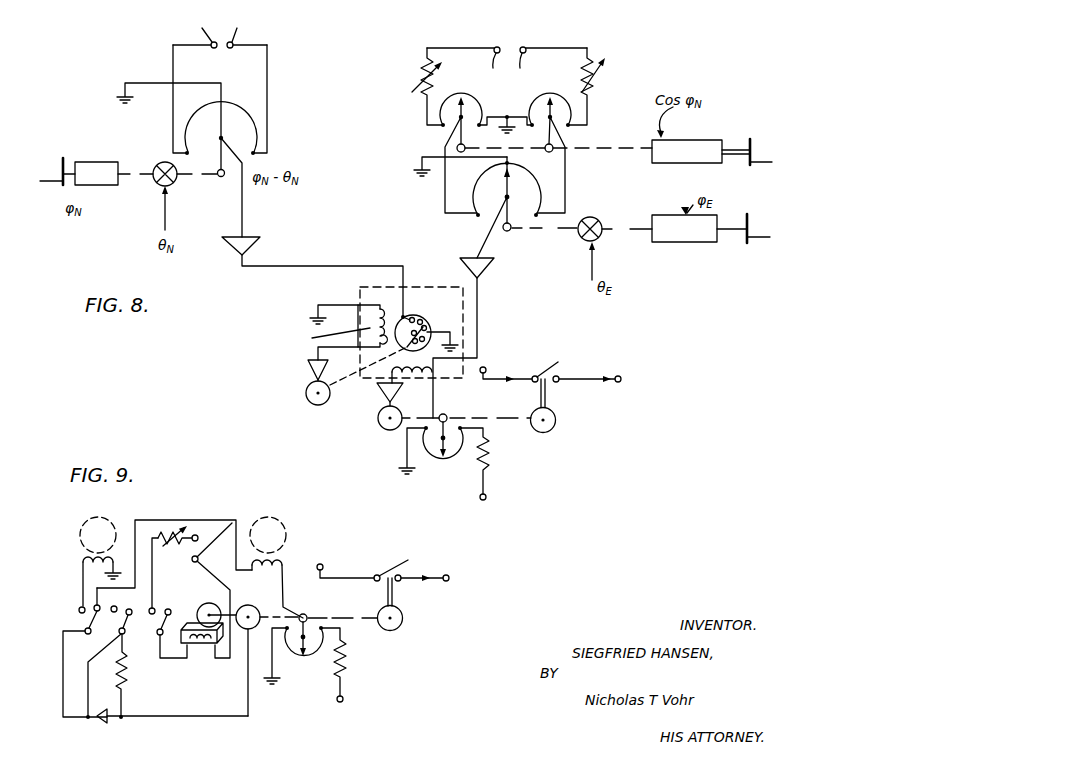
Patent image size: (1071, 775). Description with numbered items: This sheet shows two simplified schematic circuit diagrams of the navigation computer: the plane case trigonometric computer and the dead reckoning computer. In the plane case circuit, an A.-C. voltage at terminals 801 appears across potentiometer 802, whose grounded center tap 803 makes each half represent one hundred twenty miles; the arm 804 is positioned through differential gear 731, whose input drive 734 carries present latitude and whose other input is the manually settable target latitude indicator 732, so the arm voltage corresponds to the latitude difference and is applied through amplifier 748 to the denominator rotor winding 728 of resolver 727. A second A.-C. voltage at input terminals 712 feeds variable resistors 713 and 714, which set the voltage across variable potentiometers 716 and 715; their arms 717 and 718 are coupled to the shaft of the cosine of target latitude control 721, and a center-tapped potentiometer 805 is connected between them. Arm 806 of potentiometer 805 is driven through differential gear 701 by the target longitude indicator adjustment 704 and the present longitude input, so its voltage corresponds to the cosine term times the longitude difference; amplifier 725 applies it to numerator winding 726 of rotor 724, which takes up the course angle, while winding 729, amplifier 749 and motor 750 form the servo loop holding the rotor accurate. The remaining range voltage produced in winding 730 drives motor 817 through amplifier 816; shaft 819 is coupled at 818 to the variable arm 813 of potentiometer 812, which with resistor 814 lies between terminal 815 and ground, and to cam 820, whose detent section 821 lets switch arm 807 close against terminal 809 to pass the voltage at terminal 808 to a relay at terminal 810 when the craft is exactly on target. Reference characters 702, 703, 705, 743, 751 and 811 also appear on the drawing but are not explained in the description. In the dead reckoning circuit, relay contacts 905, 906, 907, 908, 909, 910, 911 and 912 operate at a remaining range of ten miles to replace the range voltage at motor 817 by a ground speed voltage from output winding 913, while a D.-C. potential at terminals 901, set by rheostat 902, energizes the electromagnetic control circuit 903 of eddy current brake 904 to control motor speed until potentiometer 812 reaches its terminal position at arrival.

In FIG. 8, the differential gear 701 is at (598, 218).
In FIG. 8, the theta E input arrow 702 is at (588, 258).
In FIG. 8, the connection line 703 is at (636, 226).
In FIG. 8, the target longitude indicator adjustment 704 is at (680, 243).
In FIG. 8, the potentiometer wiper contact 705 is at (511, 231).
In FIG. 8, the input terminals 712 is at (507, 63).
In FIG. 8, the variable resistor 713 is at (412, 78).
In FIG. 8, the variable resistor 714 is at (600, 84).
In FIG. 8, the variable potentiometer 715 is at (556, 89).
In FIG. 8, the variable potentiometer 716 is at (480, 89).
In FIG. 8, the variable arm 717 is at (441, 147).
In FIG. 8, the variable arm 718 is at (566, 147).
In FIG. 8, the cosine of target latitude control 721 is at (678, 139).
In FIG. 8, the rotor 724 is at (416, 316).
In FIG. 9, the rotor 724 is at (287, 528).
In FIG. 8, the amplifier 725 is at (473, 256).
In FIG. 8, the numerator winding 726 is at (433, 368).
In FIG. 8, the resolver 727 is at (343, 292).
In FIG. 8, the denominator rotor winding 728 is at (423, 318).
In FIG. 8, the winding 729 is at (312, 338).
In FIG. 8, the remaining range resolver winding 730 is at (417, 373).
In FIG. 9, the remaining range resolver winding 730 is at (288, 562).
In FIG. 8, the differential gear 731 is at (165, 161).
In FIG. 8, the target latitude indicator 732 is at (105, 161).
In FIG. 8, the input drive 734 is at (158, 186).
In FIG. 8, the connection 743 is at (193, 181).
In FIG. 8, the amplifier 748 is at (250, 237).
In FIG. 8, the amplifier 749 is at (306, 365).
In FIG. 8, the motor 750 is at (307, 398).
In FIG. 8, the mechanical linkage 751 is at (355, 367).
In FIG. 8, the terminals 801 is at (220, 31).
In FIG. 8, the potentiometer 802 is at (243, 110).
In FIG. 8, the grounded center tap 803 is at (113, 90).
In FIG. 8, the arm 804 is at (227, 133).
In FIG. 8, the center-tapped potentiometer 805 is at (473, 192).
In FIG. 8, the arm 806 is at (512, 190).
In FIG. 8, the switch arm 807 is at (549, 371).
In FIG. 9, the switch arm 807 is at (403, 570).
In FIG. 8, the terminal 808 is at (485, 366).
In FIG. 8, the contact terminal 809 is at (565, 377).
In FIG. 8, the terminal 810 is at (622, 377).
In FIG. 8, the shaft 811 is at (548, 402).
In FIG. 8, the potentiometer 812 is at (426, 452).
In FIG. 9, the potentiometer 812 is at (306, 660).
In FIG. 8, the variable arm 813 is at (440, 460).
In FIG. 9, the variable arm 813 is at (300, 651).
In FIG. 8, the resistor 814 is at (490, 471).
In FIG. 9, the resistor 814 is at (347, 668).
In FIG. 8, the terminal 815 is at (487, 498).
In FIG. 8, the amplifier 816 is at (380, 394).
In FIG. 9, the amplifier 816 is at (97, 722).
In FIG. 8, the motor 817 is at (380, 427).
In FIG. 9, the motor 817 is at (268, 599).
In FIG. 8, the mechanical coupling 818 is at (448, 411).
In FIG. 9, the mechanical coupling 818 is at (309, 614).
In FIG. 8, the shaft 819 is at (480, 416).
In FIG. 8, the cam 820 is at (546, 433).
In FIG. 9, the cam 820 is at (403, 618).
In FIG. 8, the detent section 821 is at (556, 421).
In FIG. 9, the terminals 901 is at (198, 534).
In FIG. 9, the rheostat 902 is at (173, 528).
In FIG. 9, the electromagnetic control circuit 903 is at (200, 646).
In FIG. 9, the eddy current brake 904 is at (211, 594).
In FIG. 9, the relay contact 905 is at (78, 624).
In FIG. 9, the relay contact 906 is at (127, 660).
In FIG. 9, the relay contact 907 is at (158, 631).
In FIG. 9, the relay contact 908 is at (170, 608).
In FIG. 9, the relay contact 909 is at (155, 606).
In FIG. 9, the relay contact 910 is at (125, 608).
In FIG. 9, the relay contact 911 is at (93, 604).
In FIG. 9, the relay contact 912 is at (78, 610).
In FIG. 9, the output winding 913 is at (80, 561).